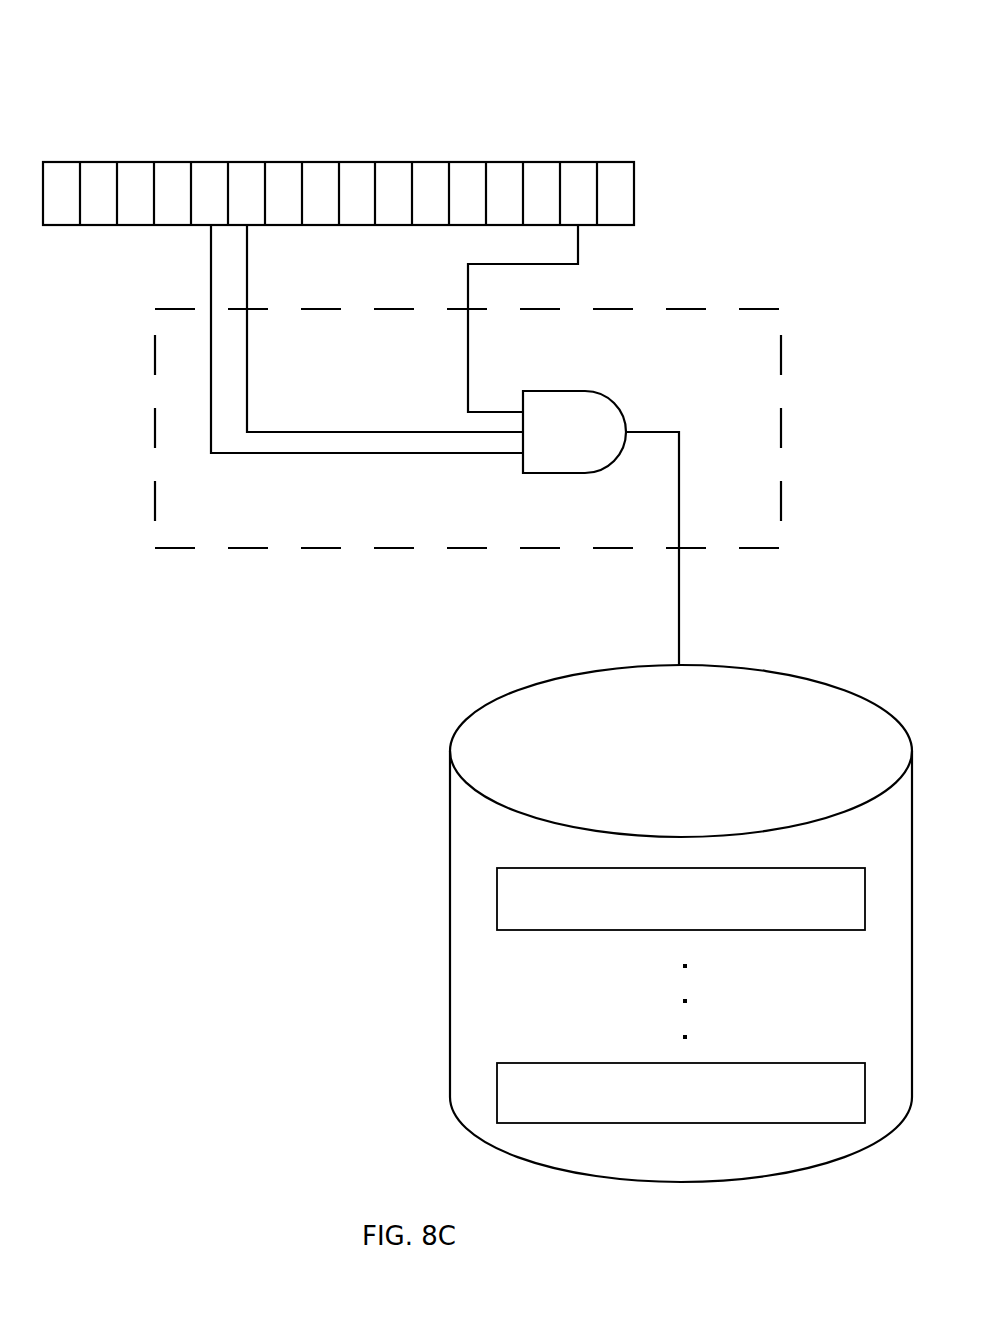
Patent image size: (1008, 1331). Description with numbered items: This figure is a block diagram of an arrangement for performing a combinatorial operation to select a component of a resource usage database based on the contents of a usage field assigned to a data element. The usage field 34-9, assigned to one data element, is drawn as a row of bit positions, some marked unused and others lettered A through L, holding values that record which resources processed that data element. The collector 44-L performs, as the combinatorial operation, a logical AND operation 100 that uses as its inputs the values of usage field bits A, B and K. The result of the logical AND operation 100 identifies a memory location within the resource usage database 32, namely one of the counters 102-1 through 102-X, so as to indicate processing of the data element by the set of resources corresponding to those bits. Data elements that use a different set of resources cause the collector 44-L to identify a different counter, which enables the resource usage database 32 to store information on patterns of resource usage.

The usage field 34-9 is at (485, 80).
The collector 44-L is at (468, 428).
The logical AND operation 100 is at (574, 432).
The resource usage database 32 is at (681, 923).
The counter 102-1 is at (681, 899).
The counter 102-X is at (681, 1093).